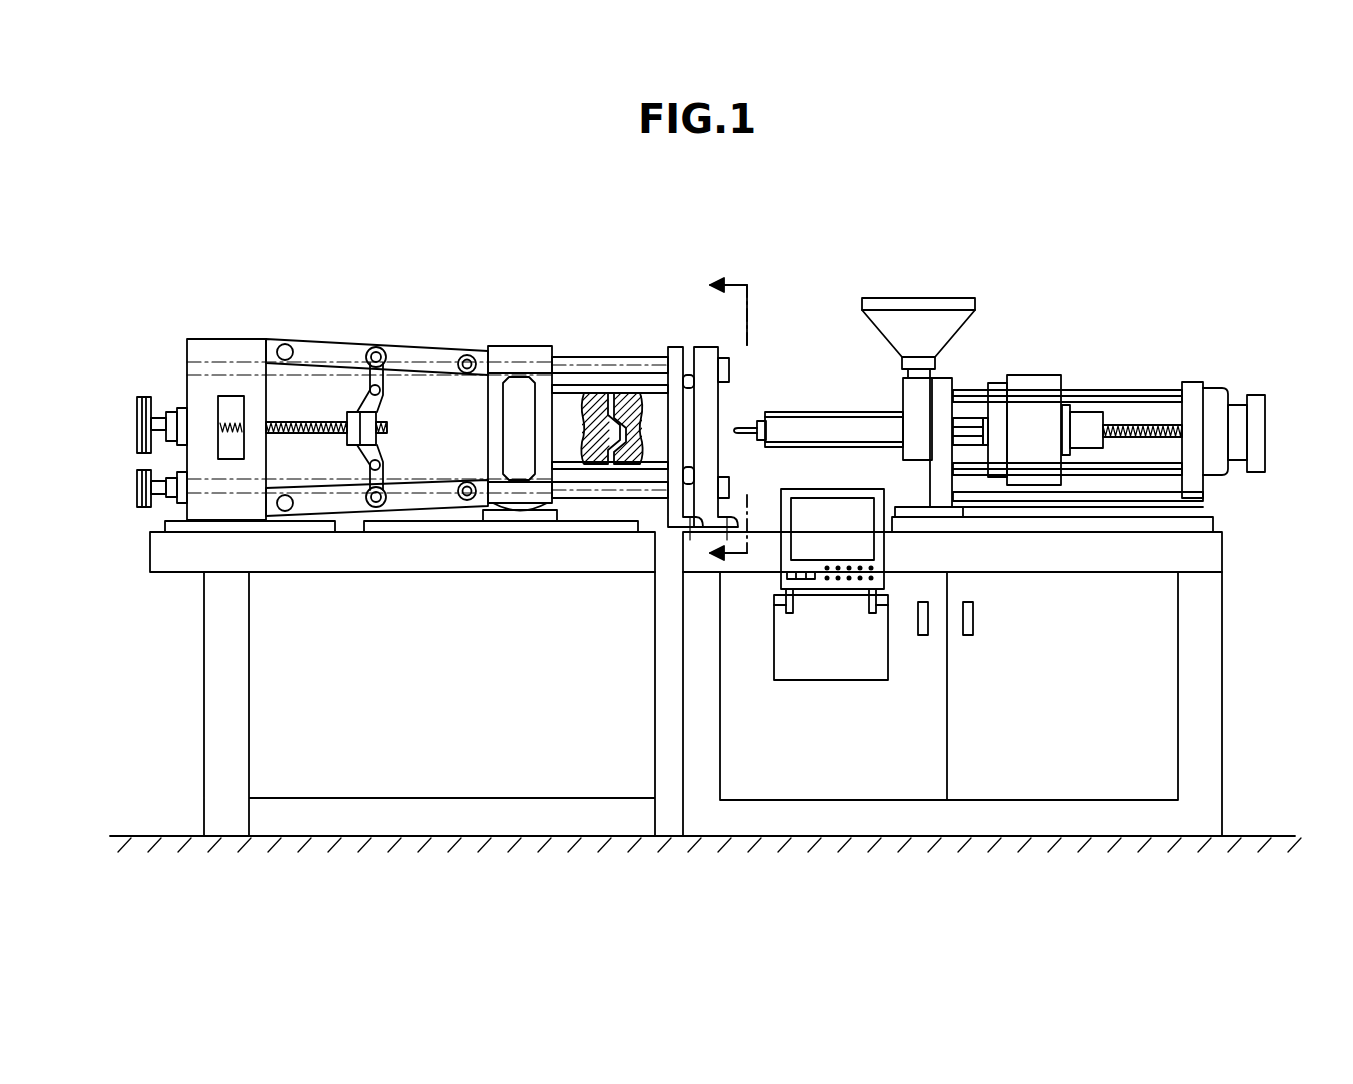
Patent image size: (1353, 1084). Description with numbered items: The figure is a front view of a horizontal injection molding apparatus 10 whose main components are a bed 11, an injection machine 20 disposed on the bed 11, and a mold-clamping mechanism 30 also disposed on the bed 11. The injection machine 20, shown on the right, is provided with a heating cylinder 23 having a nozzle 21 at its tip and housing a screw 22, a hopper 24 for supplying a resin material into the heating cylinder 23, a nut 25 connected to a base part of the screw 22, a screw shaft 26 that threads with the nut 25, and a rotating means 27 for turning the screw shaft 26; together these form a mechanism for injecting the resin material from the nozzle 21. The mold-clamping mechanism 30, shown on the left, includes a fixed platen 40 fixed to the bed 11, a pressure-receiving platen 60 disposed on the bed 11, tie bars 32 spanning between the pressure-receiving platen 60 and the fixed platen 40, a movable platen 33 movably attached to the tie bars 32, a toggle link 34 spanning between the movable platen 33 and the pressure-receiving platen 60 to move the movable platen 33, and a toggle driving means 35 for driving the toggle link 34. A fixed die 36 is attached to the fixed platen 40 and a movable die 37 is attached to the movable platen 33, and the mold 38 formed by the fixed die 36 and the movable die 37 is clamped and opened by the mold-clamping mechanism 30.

The injection molding apparatus 10 is at (1003, 183).
The bed 11 is at (1213, 686).
The injection machine 20 is at (1080, 322).
The nozzle 21 is at (748, 426).
The screw 22 is at (966, 420).
The heating cylinder 23 is at (822, 412).
The hopper 24 is at (915, 300).
The nut 25 is at (1085, 425).
The screw shaft 26 is at (1142, 422).
The rotating means 27 is at (1255, 396).
The mold-clamping mechanism 30 is at (432, 297).
The tie bars 32 is at (610, 365).
The movable platen 33 is at (508, 346).
The toggle link 34 is at (340, 342).
The toggle driving means 35 is at (178, 502).
The fixed die 36 is at (643, 400).
The movable die 37 is at (565, 392).
The mold 38 is at (667, 268).
The fixed platen 40 is at (686, 340).
The pressure-receiving platen 60 is at (210, 339).